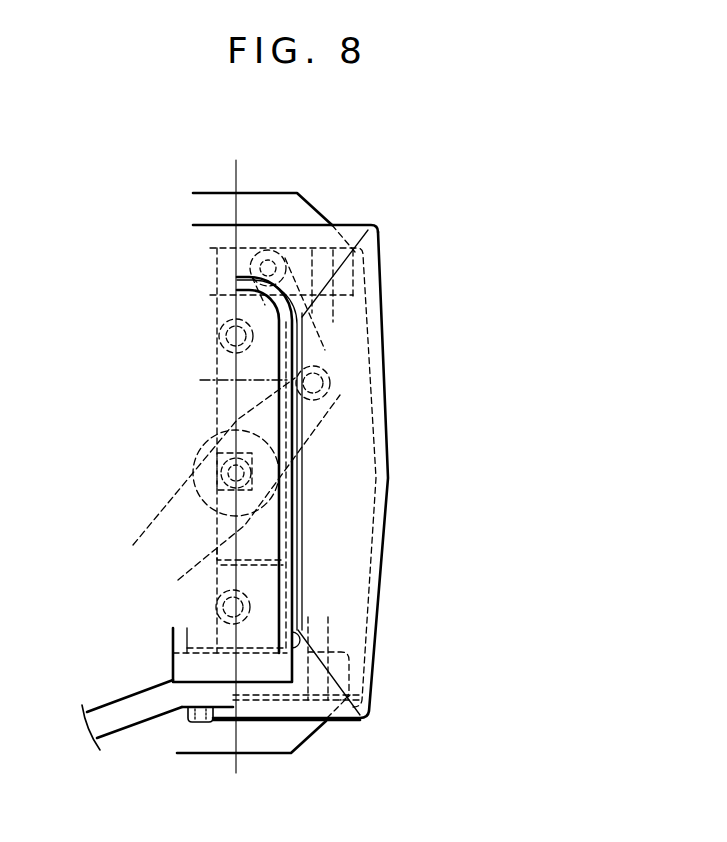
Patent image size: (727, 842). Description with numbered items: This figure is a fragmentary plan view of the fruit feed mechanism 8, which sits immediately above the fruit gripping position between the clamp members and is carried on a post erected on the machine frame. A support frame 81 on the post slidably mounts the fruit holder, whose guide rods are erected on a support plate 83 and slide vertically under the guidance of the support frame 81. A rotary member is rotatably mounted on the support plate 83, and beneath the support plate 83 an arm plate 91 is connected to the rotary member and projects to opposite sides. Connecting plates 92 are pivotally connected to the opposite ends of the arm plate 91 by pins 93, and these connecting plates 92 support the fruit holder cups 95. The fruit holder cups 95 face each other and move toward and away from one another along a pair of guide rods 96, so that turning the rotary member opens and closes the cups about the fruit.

The fruit feed mechanism 8 is at (413, 692).
The support frame 81 is at (182, 643).
The support plate 83 is at (380, 436).
The arm plate 91 is at (188, 476).
The connecting plates 92 is at (325, 350).
The pins 93 is at (321, 394).
The fruit holder cups 95 is at (276, 210).
The guide rods 96 is at (328, 637).